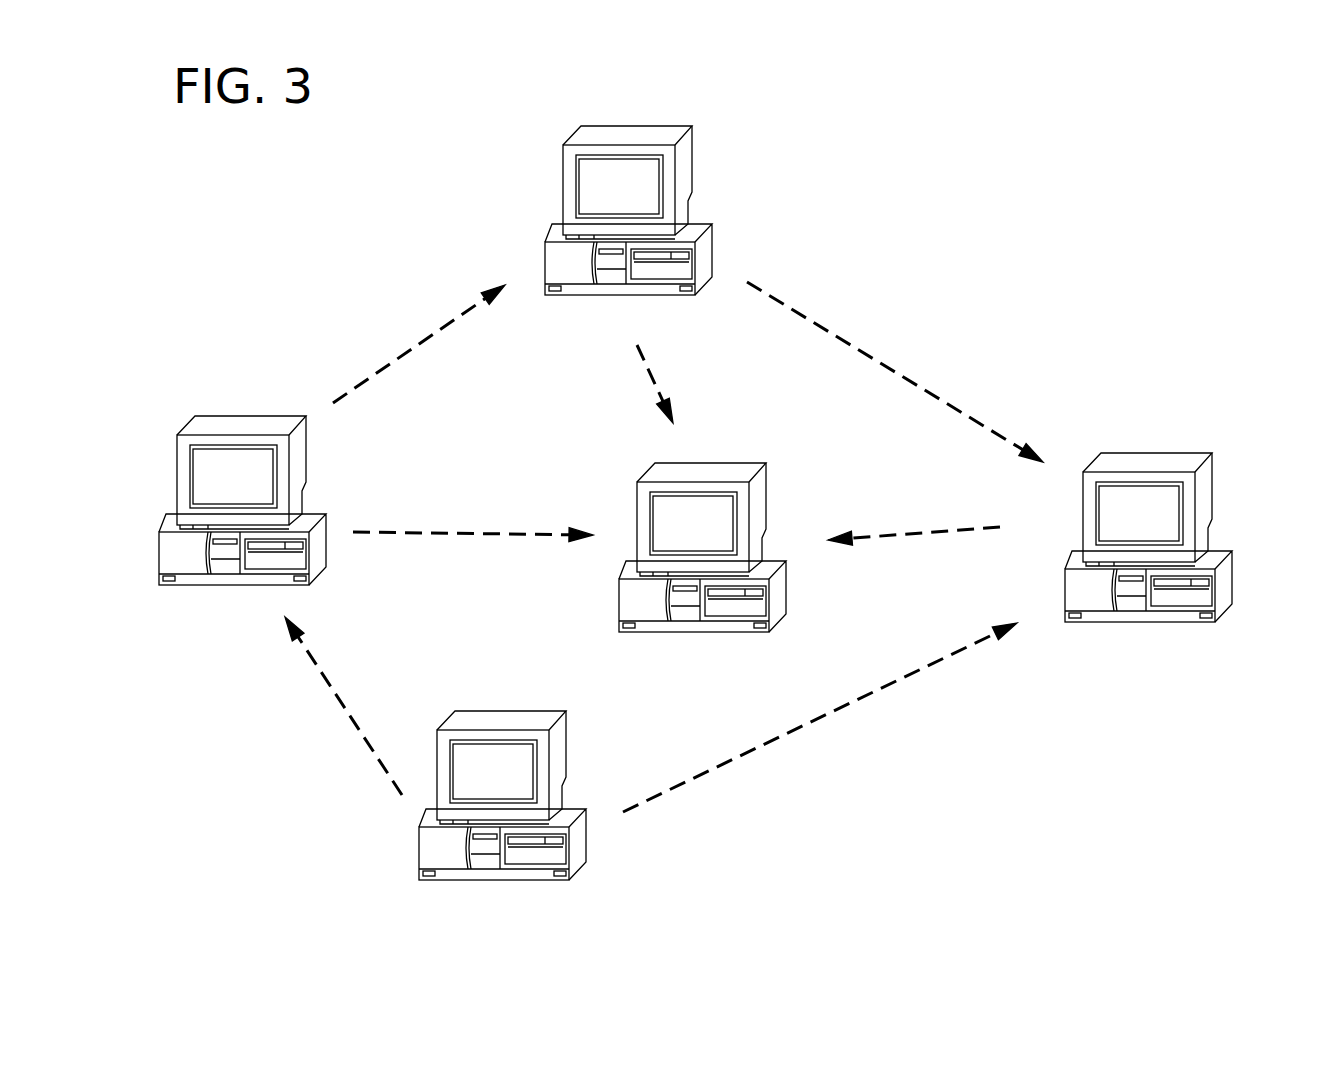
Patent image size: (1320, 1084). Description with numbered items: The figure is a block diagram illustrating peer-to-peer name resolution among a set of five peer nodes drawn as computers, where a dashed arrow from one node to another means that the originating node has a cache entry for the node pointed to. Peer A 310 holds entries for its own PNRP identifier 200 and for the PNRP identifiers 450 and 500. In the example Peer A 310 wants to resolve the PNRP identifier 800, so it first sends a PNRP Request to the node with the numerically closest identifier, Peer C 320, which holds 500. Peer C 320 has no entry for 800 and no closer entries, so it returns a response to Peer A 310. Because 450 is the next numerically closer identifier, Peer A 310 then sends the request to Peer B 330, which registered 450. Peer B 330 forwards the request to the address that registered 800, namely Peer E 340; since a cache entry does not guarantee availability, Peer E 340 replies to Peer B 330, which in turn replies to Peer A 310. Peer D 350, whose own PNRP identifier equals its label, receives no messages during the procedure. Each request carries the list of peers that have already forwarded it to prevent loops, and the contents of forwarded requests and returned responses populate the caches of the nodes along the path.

The Peer A 310 is at (197, 418).
The Peer B 330 is at (587, 138).
The Peer C 320 is at (743, 472).
The Peer D 350 is at (452, 873).
The Peer E 340 is at (1175, 615).
The PNRP identifier 200 is at (205, 496).
The PNRP identifier 450 is at (593, 207).
The PNRP identifier 500 is at (734, 549).
The PNRP identifier 800 is at (1172, 541).